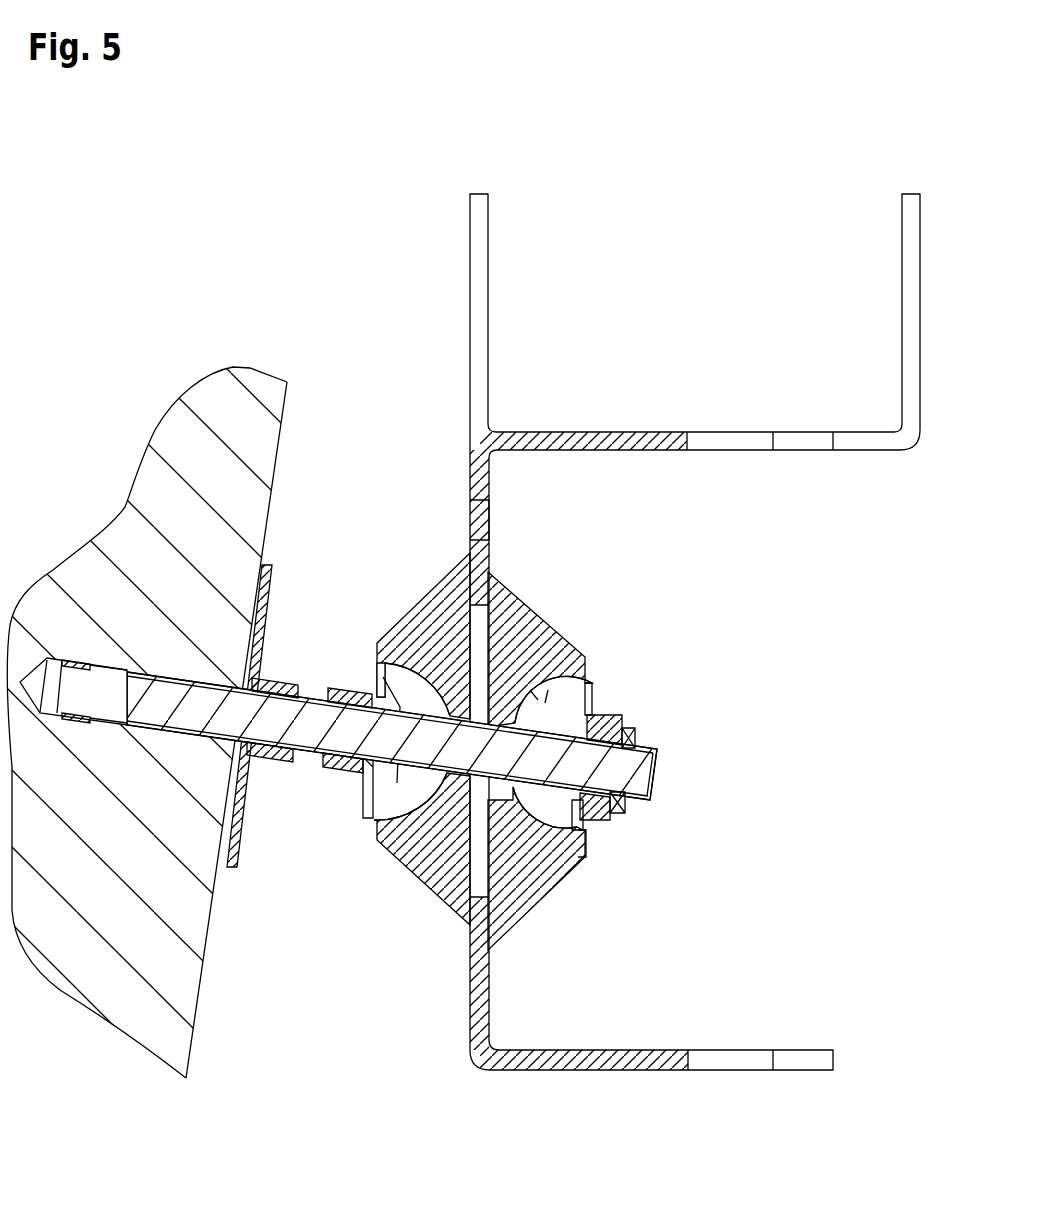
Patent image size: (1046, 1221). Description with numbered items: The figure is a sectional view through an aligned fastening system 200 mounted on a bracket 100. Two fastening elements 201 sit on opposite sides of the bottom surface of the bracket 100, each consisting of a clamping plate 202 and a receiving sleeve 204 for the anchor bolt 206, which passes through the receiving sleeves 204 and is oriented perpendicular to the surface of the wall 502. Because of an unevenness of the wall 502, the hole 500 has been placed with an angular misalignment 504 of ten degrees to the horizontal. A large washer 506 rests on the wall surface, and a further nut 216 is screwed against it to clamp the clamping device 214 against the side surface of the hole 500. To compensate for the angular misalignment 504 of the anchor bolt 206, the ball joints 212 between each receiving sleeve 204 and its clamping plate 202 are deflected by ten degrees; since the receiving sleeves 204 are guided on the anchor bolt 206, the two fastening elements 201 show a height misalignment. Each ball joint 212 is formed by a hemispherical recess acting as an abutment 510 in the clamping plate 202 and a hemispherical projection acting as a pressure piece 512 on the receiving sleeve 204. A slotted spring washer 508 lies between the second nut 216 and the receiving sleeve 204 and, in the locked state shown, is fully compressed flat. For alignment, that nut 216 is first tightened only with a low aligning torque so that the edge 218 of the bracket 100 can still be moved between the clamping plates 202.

The bracket 100 is at (471, 481).
The fastening system 200 is at (489, 765).
The fastening element 201 is at (425, 883).
The clamping plate 202 is at (447, 577).
The receiving sleeve 204 is at (575, 826).
The anchor bolt 206 is at (643, 772).
The ball joint 212 is at (428, 665).
The clamping device 214 is at (50, 678).
The nut 216 is at (265, 757).
The edge 218 is at (487, 521).
The hole 500 is at (187, 677).
The wall 502 is at (185, 1042).
The angular misalignment 504 is at (395, 727).
The large washer 506 is at (222, 867).
The spring washer 508 is at (610, 718).
The abutment 510 is at (413, 687).
The pressure piece 512 is at (380, 637).